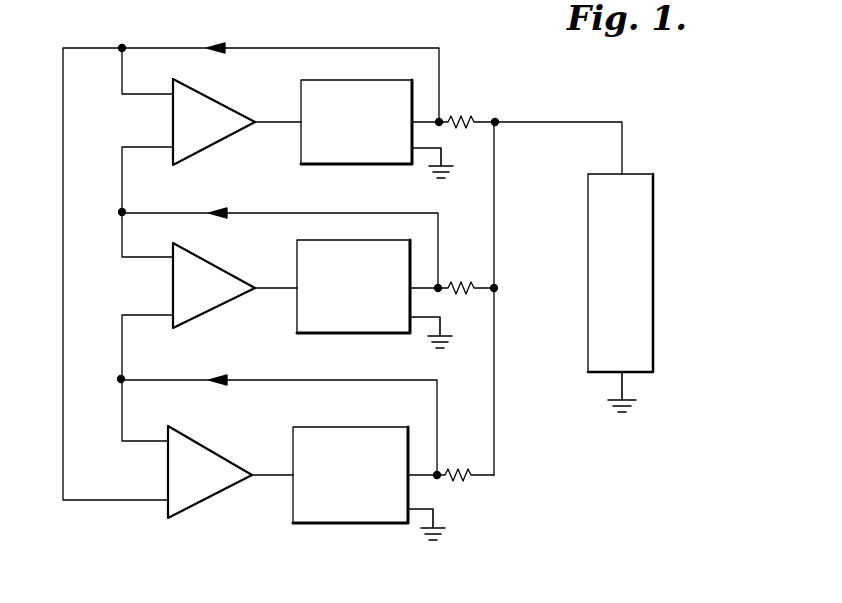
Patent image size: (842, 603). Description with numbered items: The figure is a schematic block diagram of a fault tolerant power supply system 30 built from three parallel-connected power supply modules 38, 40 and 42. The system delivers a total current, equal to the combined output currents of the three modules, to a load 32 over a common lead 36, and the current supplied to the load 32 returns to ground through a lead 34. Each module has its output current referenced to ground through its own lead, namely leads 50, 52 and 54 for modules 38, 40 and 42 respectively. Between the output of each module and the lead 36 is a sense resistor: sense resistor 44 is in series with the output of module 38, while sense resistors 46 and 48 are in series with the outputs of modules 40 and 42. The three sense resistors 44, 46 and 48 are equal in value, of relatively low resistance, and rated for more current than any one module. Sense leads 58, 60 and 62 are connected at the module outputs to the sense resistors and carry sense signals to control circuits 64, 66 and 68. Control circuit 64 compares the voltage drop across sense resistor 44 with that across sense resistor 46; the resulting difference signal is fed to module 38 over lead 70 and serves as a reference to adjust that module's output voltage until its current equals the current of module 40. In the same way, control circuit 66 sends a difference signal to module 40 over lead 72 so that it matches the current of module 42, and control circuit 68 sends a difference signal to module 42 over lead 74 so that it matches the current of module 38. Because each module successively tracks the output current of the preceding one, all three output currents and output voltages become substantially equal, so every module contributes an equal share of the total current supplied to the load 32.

The fault tolerant power supply system 30 is at (258, 525).
The load 32 is at (653, 291).
The lead 34 is at (631, 387).
The lead 36 is at (622, 148).
The power supply module 38 is at (324, 81).
The power supply module 40 is at (297, 326).
The power supply module 42 is at (337, 523).
The sense resistor 44 is at (450, 116).
The sense resistor 46 is at (457, 285).
The sense resistor 48 is at (468, 482).
The lead 50 is at (444, 168).
The lead 52 is at (440, 340).
The lead 54 is at (444, 527).
The sense lead 58 is at (404, 48).
The sense lead 60 is at (332, 213).
The sense lead 62 is at (328, 380).
The control circuit 64 is at (205, 96).
The control circuit 66 is at (205, 261).
The control circuit 68 is at (209, 444).
The lead 70 is at (265, 126).
The lead 72 is at (268, 286).
The lead 74 is at (262, 478).